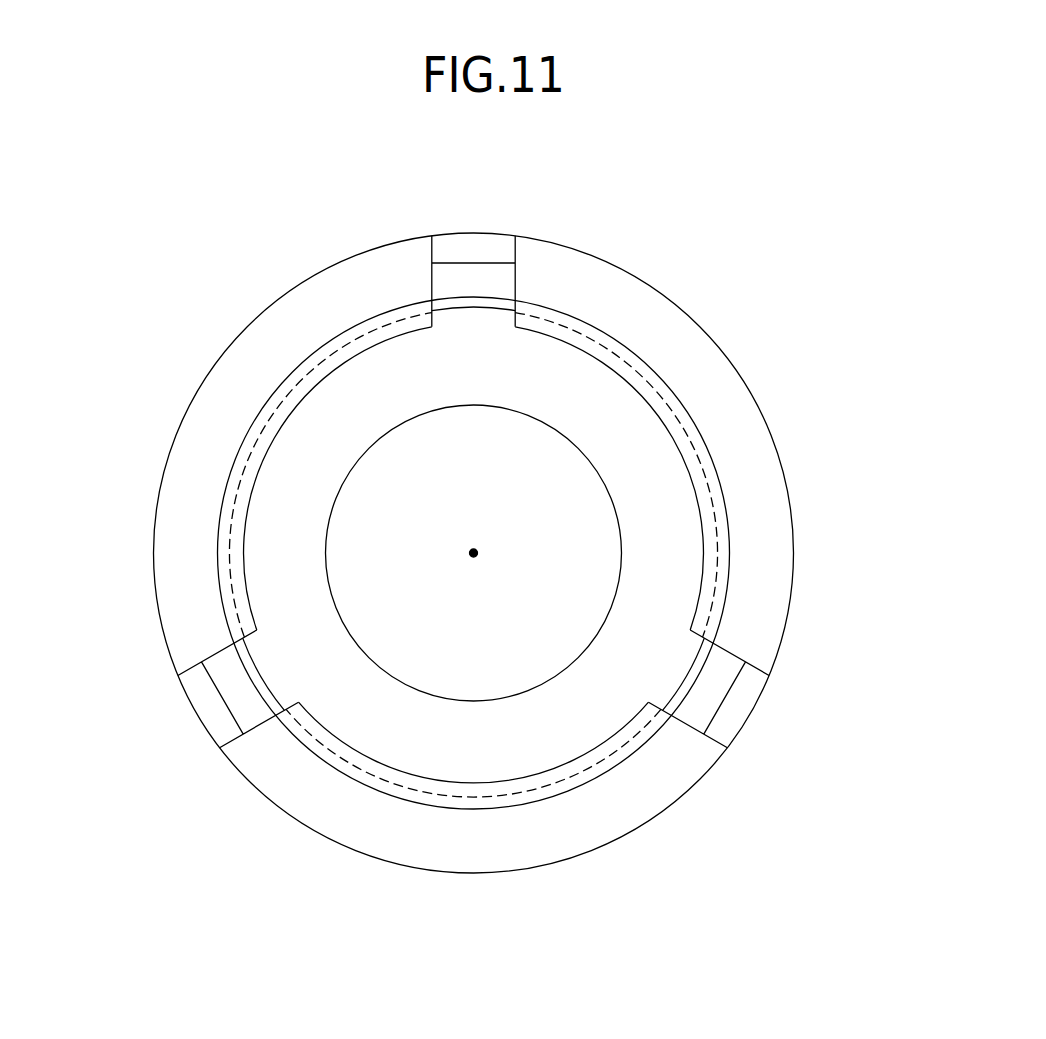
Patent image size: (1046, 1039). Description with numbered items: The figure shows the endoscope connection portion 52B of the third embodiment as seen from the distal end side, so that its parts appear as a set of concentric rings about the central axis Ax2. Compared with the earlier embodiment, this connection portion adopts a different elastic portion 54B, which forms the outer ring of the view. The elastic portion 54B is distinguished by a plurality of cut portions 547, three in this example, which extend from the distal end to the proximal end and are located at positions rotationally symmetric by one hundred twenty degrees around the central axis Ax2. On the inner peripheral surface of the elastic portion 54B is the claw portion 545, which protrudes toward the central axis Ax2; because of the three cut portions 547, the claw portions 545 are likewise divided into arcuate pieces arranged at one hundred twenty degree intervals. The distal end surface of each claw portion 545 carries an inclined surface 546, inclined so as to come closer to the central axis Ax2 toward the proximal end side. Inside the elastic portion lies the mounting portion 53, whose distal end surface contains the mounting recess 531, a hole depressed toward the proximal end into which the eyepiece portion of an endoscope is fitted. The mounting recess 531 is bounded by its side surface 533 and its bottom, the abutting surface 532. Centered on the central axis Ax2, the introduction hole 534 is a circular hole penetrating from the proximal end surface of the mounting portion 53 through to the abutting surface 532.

The endoscope connection portion 52B is at (519, 558).
The elastic portion 54B is at (288, 792).
The mounting portion 53 is at (563, 531).
The mounting recess 531 is at (496, 450).
The abutting surface 532 is at (610, 395).
The side surface 533 is at (497, 312).
The introduction hole 534 is at (613, 505).
The claw portion 545 is at (293, 405).
The inclined surface 546 is at (245, 440).
The cut portion 547 is at (433, 276).
The central axis Ax2 is at (474, 553).